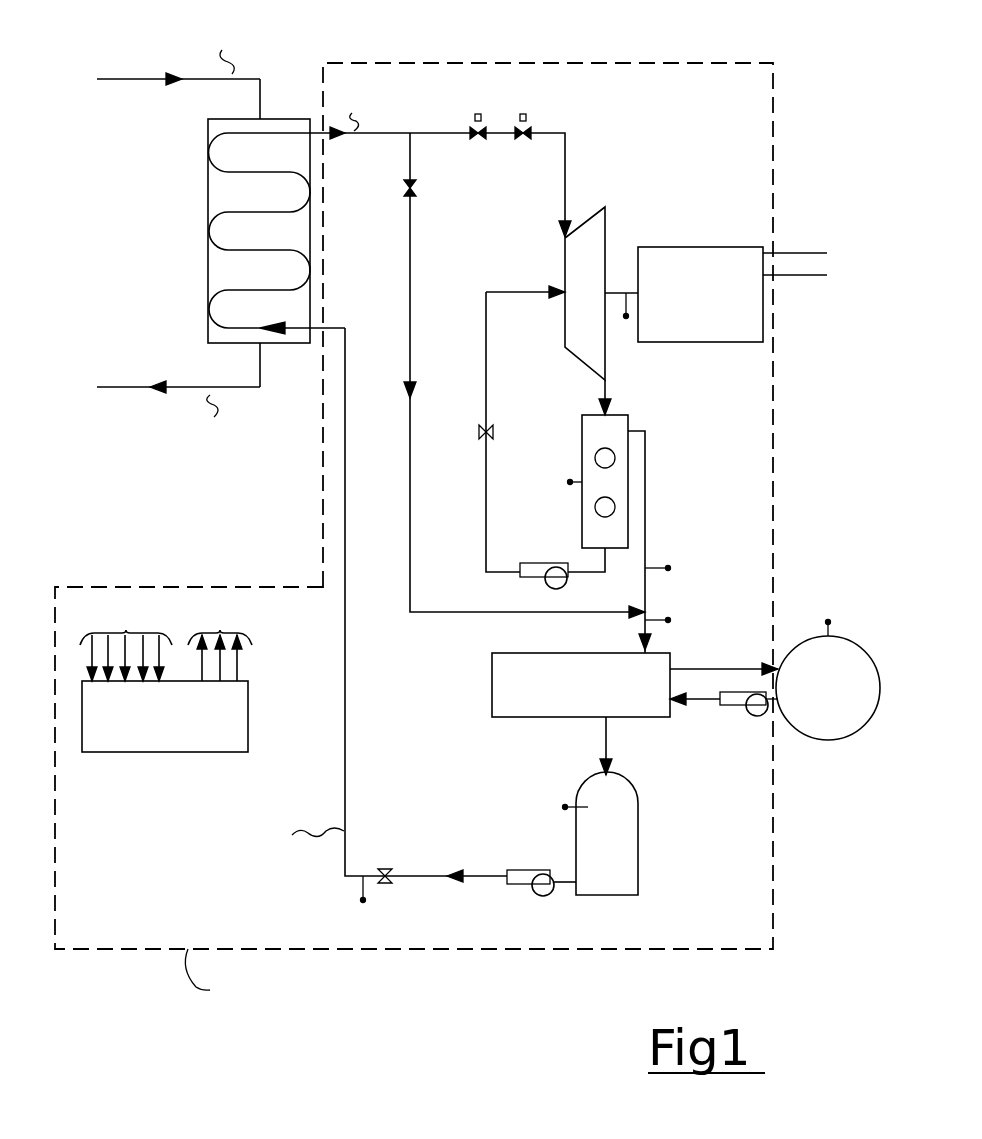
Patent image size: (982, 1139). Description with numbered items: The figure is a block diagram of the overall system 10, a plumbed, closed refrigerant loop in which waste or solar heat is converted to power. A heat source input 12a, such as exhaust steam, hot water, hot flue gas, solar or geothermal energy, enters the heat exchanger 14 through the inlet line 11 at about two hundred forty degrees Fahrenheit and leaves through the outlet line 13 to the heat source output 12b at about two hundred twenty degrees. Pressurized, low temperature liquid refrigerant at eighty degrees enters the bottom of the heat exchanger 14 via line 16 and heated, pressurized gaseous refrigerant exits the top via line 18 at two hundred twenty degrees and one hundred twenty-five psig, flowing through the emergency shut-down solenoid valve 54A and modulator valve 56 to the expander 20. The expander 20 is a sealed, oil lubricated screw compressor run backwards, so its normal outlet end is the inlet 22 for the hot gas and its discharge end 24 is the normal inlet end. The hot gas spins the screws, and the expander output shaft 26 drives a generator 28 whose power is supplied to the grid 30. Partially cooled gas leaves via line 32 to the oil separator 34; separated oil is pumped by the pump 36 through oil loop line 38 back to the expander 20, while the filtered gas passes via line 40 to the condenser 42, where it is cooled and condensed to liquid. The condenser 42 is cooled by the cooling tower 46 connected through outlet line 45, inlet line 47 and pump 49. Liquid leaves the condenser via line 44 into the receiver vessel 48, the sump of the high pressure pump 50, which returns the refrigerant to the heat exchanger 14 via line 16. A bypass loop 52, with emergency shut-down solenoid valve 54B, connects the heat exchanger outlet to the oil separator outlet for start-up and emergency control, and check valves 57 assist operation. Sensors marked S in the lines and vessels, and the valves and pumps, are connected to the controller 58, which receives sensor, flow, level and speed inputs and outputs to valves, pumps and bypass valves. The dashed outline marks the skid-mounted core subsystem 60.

The overall system 10 is at (518, 982).
The heat source inlet line 11 is at (260, 83).
The heat source input 12a is at (107, 86).
The heat source output 12b is at (146, 407).
The heat source outlet line 13 is at (260, 360).
The heat exchanger 14 is at (310, 186).
The line 16 is at (345, 716).
The line 18 is at (380, 142).
The expander 20 is at (592, 301).
The inlet 22 is at (548, 232).
The discharge end 24 is at (606, 378).
The expander output shaft 26 is at (622, 284).
The generator 28 is at (682, 285).
The grid 30 is at (832, 270).
The line 32 is at (614, 406).
The oil separator 34 is at (582, 438).
The pump 36 is at (540, 562).
The oil loop line 38 is at (486, 498).
The line 40 is at (645, 487).
The condenser 42 is at (516, 679).
The line 44 is at (606, 748).
The outlet line 45 is at (726, 668).
The cooling tower 46 is at (836, 679).
The inlet line 47 is at (694, 706).
The receiver vessel 48 is at (614, 855).
The pump 49 is at (736, 708).
The high pressure pump 50 is at (512, 888).
The bypass loop 52 is at (412, 356).
The emergency shut-down solenoid valve 54A is at (482, 130).
The emergency shut-down solenoid valve 54B is at (414, 186).
The modulator valve 56 is at (530, 130).
The check valve 57 is at (490, 432).
The controller 58 is at (234, 711).
The skid-mounted core subsystem 60 is at (778, 438).